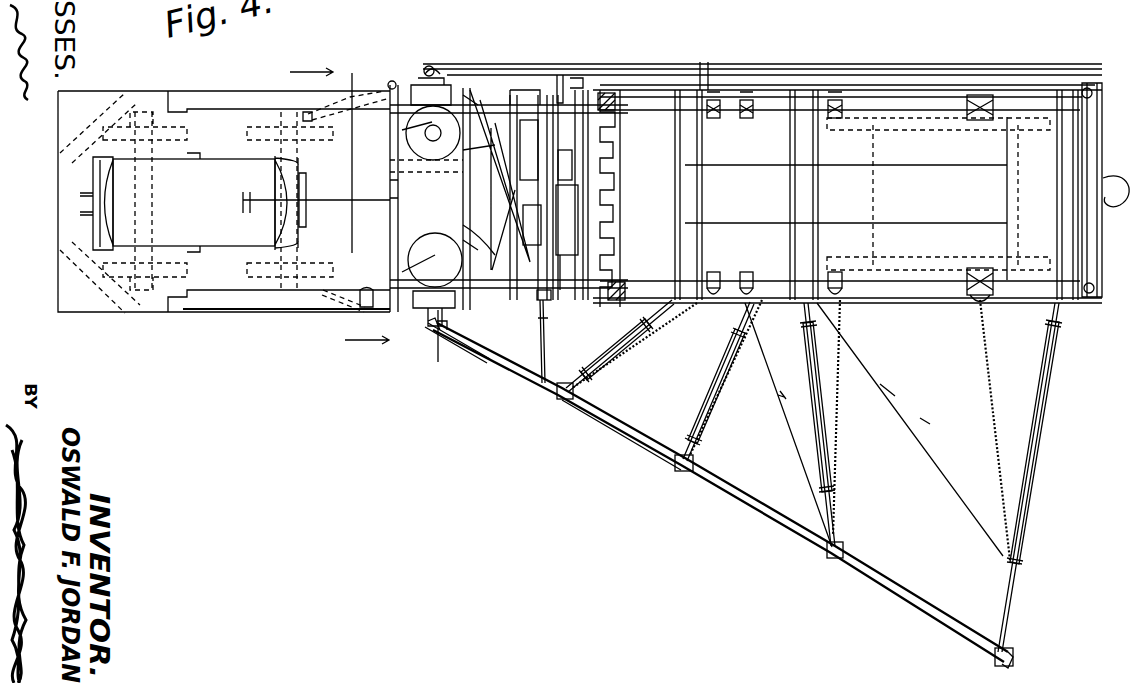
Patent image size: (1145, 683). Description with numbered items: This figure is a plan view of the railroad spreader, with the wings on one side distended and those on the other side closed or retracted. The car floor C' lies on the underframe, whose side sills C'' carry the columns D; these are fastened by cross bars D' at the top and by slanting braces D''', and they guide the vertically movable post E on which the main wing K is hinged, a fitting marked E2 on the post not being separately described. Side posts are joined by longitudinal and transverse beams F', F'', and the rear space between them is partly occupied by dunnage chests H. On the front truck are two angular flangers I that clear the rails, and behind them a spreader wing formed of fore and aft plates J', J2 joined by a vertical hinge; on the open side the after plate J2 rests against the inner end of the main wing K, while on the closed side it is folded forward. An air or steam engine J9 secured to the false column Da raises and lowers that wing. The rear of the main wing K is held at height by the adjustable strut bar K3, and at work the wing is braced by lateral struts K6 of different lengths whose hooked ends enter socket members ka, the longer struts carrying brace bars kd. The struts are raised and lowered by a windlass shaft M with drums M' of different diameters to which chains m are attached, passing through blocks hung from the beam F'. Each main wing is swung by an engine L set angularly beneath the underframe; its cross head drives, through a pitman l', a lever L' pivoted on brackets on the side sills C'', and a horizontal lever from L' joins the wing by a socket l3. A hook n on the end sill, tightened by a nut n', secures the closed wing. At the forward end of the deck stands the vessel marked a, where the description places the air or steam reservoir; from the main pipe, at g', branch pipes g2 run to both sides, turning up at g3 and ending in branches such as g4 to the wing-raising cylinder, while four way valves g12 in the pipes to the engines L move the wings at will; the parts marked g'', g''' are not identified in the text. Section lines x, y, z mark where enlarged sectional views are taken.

The cylinder a is at (189, 202).
The front scraper or flanger I is at (100, 203).
The car floor C' is at (218, 201).
The side sill C'' is at (627, 198).
The column D is at (432, 260).
The cross bar D' is at (426, 191).
The slanting brace D''' is at (218, 281).
The false column Da is at (346, 201).
The wing post E is at (428, 88).
The lower bracket E2 is at (452, 312).
The longitudinal beam F' is at (847, 206).
The transverse beam F'' is at (876, 195).
The dunnage chest H is at (940, 222).
The forward plate of spreader wing J' is at (373, 311).
The after plate of spreader wing J2 is at (380, 85).
The spreader wing engine J9 is at (370, 82).
The main wing K is at (900, 598).
The strut bar K3 is at (622, 430).
The lateral brace or strut K6 is at (1040, 440).
The socket member ka is at (545, 402).
The brace bar kd is at (885, 392).
The wing-swinging engine L is at (558, 187).
The lever L' is at (556, 309).
The pitman l' is at (581, 265).
The socket l3 is at (550, 341).
The windlass shaft M is at (840, 196).
The drum M' is at (852, 197).
The chain m is at (960, 118).
The hook n is at (1105, 187).
The nut n' is at (1090, 300).
The branch point g' is at (381, 203).
The arm g'' is at (472, 156).
The arm g''' is at (493, 247).
The branch pipe g2 is at (417, 198).
The stand pipe g3 is at (431, 133).
The cylinder branch pipe g4 is at (433, 138).
The four way valve g12 is at (478, 300).
The section line X—X x is at (345, 201).
The section line Y—Y y is at (436, 262).
The section line Z—Z z is at (447, 180).